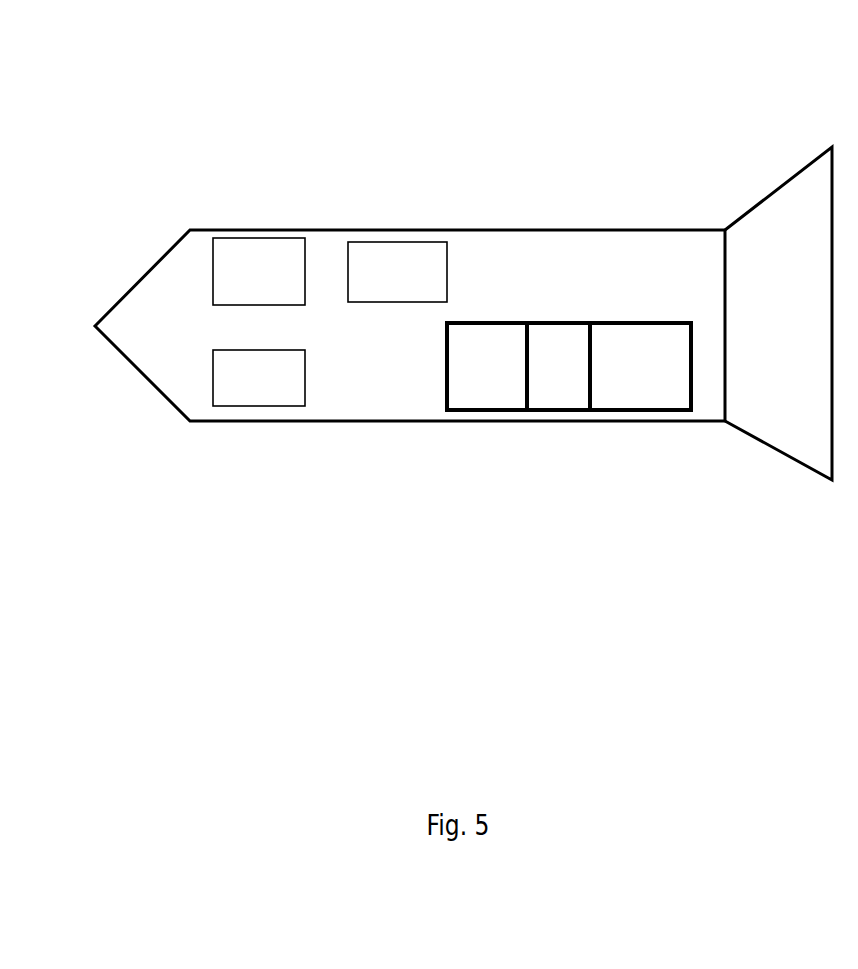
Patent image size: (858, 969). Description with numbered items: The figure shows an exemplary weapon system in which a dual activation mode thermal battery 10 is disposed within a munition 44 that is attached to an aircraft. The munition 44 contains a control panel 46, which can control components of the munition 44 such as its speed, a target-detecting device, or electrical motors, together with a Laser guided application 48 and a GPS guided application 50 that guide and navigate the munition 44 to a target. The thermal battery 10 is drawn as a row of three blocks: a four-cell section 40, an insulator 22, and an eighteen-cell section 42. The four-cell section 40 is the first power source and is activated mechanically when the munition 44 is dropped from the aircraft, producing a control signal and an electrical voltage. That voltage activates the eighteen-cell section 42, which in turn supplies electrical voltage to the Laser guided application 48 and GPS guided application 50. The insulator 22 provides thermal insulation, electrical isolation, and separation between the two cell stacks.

The munition 44 is at (98, 75).
The control panel 46 is at (248, 275).
The Laser guided application 48 is at (248, 387).
The GPS guided application 50 is at (381, 284).
The dual activation mode thermal battery 10 is at (569, 338).
The 18-cell section 42 is at (478, 377).
The insulator 22 is at (547, 377).
The 4-cell section 40 is at (625, 379).